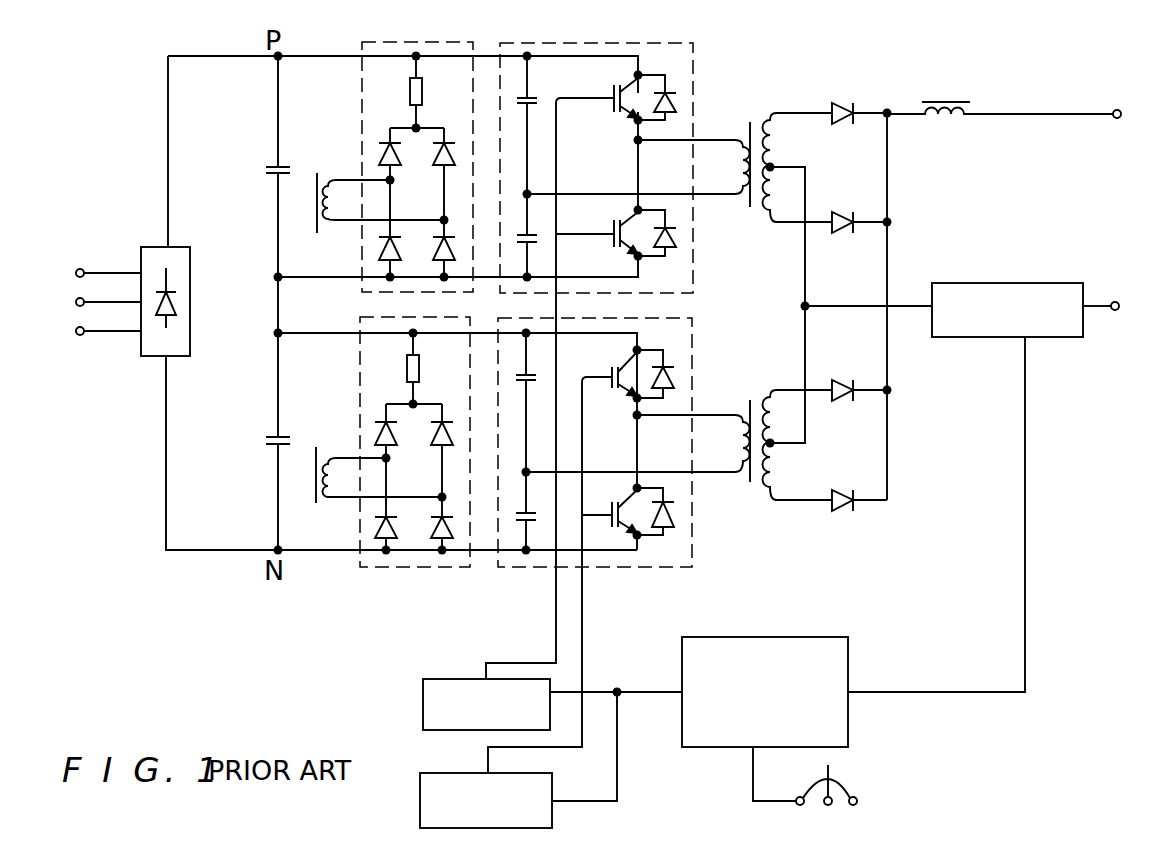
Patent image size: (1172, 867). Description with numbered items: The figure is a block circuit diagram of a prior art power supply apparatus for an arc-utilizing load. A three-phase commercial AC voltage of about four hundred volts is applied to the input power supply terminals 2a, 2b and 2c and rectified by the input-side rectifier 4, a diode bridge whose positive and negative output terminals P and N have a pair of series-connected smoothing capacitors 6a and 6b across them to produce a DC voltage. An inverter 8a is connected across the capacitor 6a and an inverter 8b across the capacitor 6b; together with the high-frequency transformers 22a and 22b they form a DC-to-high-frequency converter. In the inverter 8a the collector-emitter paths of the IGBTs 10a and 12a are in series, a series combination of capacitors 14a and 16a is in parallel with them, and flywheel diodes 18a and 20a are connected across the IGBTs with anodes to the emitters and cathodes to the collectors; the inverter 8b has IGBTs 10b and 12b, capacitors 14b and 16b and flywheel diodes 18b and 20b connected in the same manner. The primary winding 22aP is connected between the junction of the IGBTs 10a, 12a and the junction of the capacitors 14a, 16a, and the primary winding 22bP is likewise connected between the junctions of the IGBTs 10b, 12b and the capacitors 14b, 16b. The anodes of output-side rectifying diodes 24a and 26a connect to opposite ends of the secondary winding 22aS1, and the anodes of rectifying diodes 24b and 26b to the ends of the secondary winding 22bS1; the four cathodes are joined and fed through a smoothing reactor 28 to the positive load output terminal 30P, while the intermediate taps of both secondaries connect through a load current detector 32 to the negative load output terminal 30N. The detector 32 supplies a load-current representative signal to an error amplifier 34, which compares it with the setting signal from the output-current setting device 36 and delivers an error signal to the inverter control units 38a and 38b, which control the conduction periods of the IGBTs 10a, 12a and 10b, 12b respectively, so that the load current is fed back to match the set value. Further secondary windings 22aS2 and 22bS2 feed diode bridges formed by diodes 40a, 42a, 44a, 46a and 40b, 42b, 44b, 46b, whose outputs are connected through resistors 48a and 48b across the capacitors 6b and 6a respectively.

The input power supply terminal 2a is at (104, 262).
The input power supply terminal 2b is at (85, 299).
The input power supply terminal 2c is at (83, 335).
The input-side rectifier 4 is at (175, 278).
The smoothing capacitor 6a is at (266, 170).
The smoothing capacitor 6b is at (266, 440).
The inverter 8a is at (578, 43).
The inverter 8b is at (653, 337).
The IGBT 10a is at (686, 70).
The IGBT 10b is at (623, 377).
The IGBT 12a is at (630, 233).
The IGBT 12b is at (620, 530).
The capacitor 14a is at (551, 92).
The capacitor 14b is at (537, 378).
The capacitor 16a is at (537, 240).
The capacitor 16b is at (533, 517).
The flywheel diode 18a is at (676, 97).
The flywheel diode 18b is at (676, 392).
The flywheel diode 20a is at (678, 246).
The flywheel diode 20b is at (670, 540).
The high-frequency transformer 22a is at (823, 104).
The high-frequency transformer 22b is at (798, 381).
The primary winding 22aP is at (713, 170).
The primary winding 22bP is at (720, 463).
The secondary winding 22aS1 is at (814, 167).
The secondary winding 22bS1 is at (768, 422).
The secondary winding 22aS2 is at (328, 442).
The secondary winding 22bS2 is at (330, 165).
The output-side rectifying diode 24a is at (840, 104).
The output-side rectifying diode 24b is at (836, 383).
The output-side rectifying diode 26a is at (843, 207).
The output-side rectifying diode 26b is at (835, 515).
The smoothing reactor 28 is at (962, 104).
The positive load output terminal 30P is at (1115, 110).
The negative load output terminal 30N is at (1115, 302).
The load current detector 32 is at (1003, 337).
The error amplifier 34 is at (822, 636).
The output-current setting device 36 is at (838, 797).
The inverter control unit 38a is at (423, 718).
The inverter control unit 38b is at (420, 800).
The diode 40a is at (404, 469).
The diode 40b is at (450, 178).
The diode 42a is at (384, 537).
The diode 42b is at (385, 257).
The diode 44a is at (448, 438).
The diode 44b is at (452, 152).
The diode 46a is at (445, 537).
The diode 46b is at (450, 252).
The resistor 48a is at (407, 372).
The resistor 48b is at (410, 90).